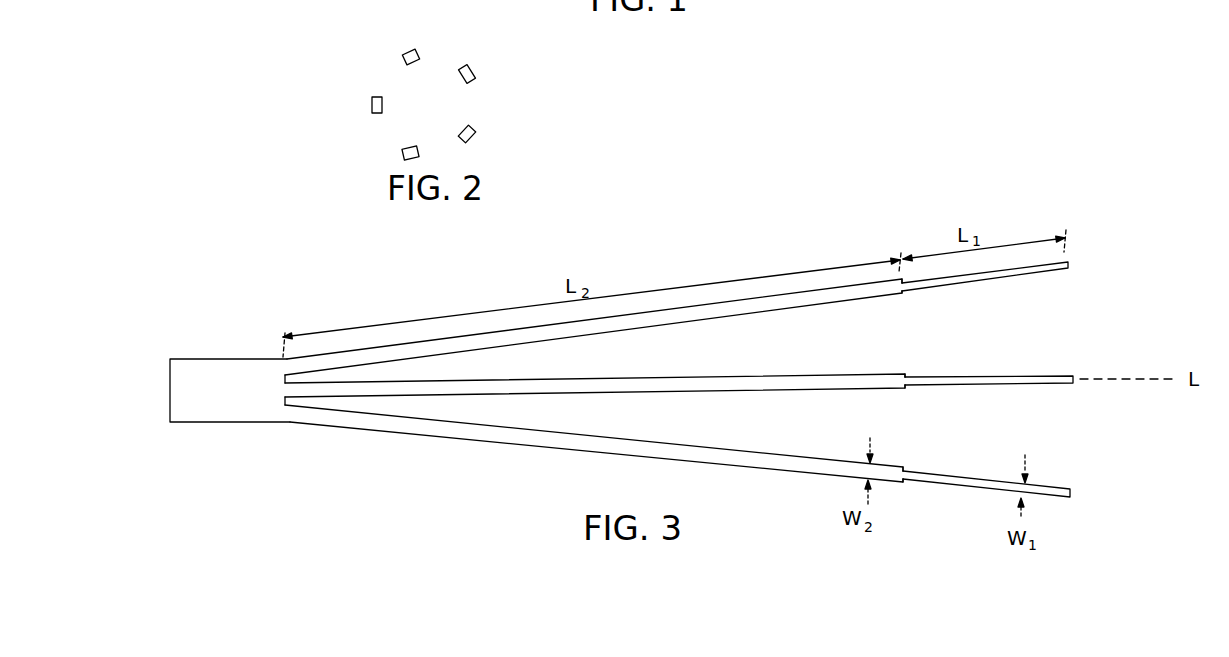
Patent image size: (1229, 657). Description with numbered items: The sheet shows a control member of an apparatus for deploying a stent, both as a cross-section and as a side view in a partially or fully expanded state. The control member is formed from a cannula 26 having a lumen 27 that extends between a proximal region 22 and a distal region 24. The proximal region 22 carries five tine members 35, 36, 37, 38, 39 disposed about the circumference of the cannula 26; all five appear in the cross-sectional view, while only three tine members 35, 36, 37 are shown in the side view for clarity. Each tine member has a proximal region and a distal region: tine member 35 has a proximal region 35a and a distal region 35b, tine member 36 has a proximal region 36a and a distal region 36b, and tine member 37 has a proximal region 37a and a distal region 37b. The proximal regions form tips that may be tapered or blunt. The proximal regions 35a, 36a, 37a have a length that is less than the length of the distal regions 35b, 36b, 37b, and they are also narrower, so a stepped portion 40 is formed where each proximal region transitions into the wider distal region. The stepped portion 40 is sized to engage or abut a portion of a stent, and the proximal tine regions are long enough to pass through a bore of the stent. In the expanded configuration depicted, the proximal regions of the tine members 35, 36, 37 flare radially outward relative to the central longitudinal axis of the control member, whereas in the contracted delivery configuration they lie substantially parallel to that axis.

In FIG. 3, the proximal region 22 is at (1036, 229).
In FIG. 3, the distal region 24 is at (212, 341).
In FIG. 3, the cannula 26 is at (222, 410).
In FIG. 2, the lumen 27 is at (425, 105).
In FIG. 3, the lumen 27 is at (168, 393).
In FIG. 2, the tine member 35 is at (402, 55).
In FIG. 3, the tine member 35 is at (677, 312).
In FIG. 3, the proximal region of tine member 35a is at (1063, 272).
In FIG. 3, the distal region of tine member 35b is at (320, 363).
In FIG. 2, the tine member 36 is at (371, 102).
In FIG. 3, the tine member 36 is at (786, 393).
In FIG. 3, the proximal region of tine member 36a is at (1070, 382).
In FIG. 3, the distal region of tine member 36b is at (322, 390).
In FIG. 2, the tine member 37 is at (402, 150).
In FIG. 3, the tine member 37 is at (512, 455).
In FIG. 3, the proximal region of tine member 37a is at (1062, 500).
In FIG. 3, the distal region of tine member 37b is at (377, 422).
In FIG. 2, the tine member 38 is at (475, 137).
In FIG. 2, the tine member 39 is at (471, 66).
In FIG. 3, the stepped portion 40 is at (903, 292).